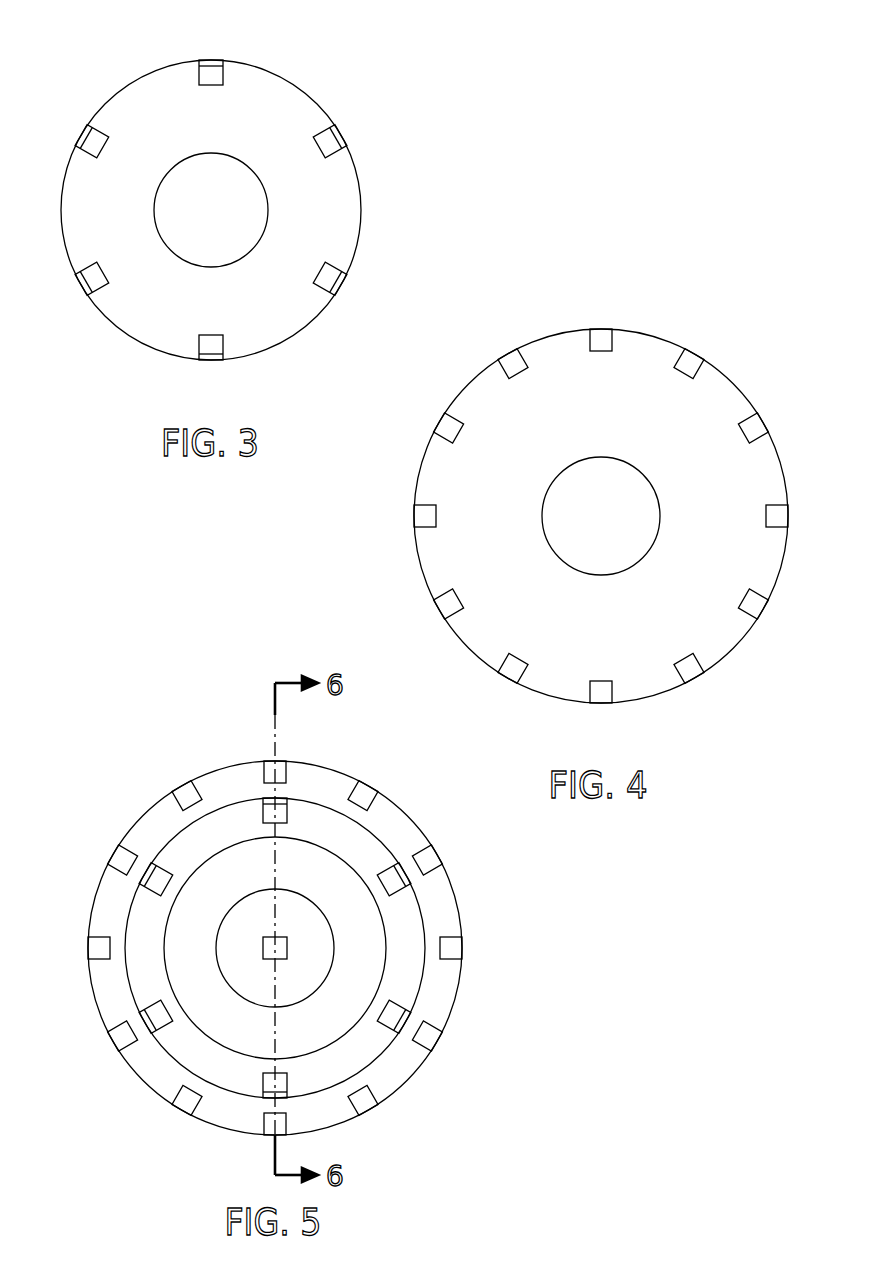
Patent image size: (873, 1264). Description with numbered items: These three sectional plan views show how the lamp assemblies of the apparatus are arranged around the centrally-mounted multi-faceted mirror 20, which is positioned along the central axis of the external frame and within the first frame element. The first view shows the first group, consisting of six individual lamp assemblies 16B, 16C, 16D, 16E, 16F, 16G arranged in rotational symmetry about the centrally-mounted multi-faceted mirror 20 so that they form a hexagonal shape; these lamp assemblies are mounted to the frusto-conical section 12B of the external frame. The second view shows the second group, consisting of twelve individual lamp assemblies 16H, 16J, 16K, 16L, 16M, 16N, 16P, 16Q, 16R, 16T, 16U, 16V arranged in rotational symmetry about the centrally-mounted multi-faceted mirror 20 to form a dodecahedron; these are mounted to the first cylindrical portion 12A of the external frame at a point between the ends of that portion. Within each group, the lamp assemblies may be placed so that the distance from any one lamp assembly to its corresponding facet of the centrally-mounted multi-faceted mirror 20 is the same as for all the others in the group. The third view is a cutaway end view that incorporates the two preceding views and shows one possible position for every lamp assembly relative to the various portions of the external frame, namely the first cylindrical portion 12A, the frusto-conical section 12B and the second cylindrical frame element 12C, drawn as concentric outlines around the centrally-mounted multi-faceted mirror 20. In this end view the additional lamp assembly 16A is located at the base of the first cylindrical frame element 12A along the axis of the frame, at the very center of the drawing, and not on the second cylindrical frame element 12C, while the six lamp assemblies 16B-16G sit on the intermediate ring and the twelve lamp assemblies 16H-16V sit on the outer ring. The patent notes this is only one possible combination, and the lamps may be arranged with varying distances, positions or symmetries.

In FIG. 4, the first cylindrical portion 12A is at (650, 336).
In FIG. 5, the first cylindrical portion 12A is at (463, 908).
In FIG. 3, the frusto-conical section 12B is at (318, 98).
In FIG. 5, the frusto-conical section 12B is at (383, 838).
In FIG. 5, the second cylindrical frame element 12C is at (306, 838).
In FIG. 3, the centrally-mounted multi-faceted mirror 20 is at (239, 161).
In FIG. 4, the centrally-mounted multi-faceted mirror 20 is at (624, 466).
In FIG. 5, the centrally-mounted multi-faceted mirror 20 is at (312, 993).
In FIG. 5, the lamp assembly 16A is at (287, 948).
In FIG. 3, the lamp assembly 16B is at (211, 60).
In FIG. 5, the lamp assembly 16B is at (272, 823).
In FIG. 3, the lamp assembly 16C is at (340, 134).
In FIG. 5, the lamp assembly 16C is at (385, 883).
In FIG. 3, the lamp assembly 16D is at (340, 282).
In FIG. 5, the lamp assembly 16D is at (390, 1010).
In FIG. 3, the lamp assembly 16E is at (211, 361).
In FIG. 5, the lamp assembly 16E is at (267, 1070).
In FIG. 3, the lamp assembly 16F is at (83, 284).
In FIG. 5, the lamp assembly 16F is at (167, 1012).
In FIG. 3, the lamp assembly 16G is at (84, 134).
In FIG. 5, the lamp assembly 16G is at (165, 889).
In FIG. 4, the lamp assembly 16H is at (601, 330).
In FIG. 5, the lamp assembly 16H is at (280, 762).
In FIG. 4, the lamp assembly 16J is at (698, 352).
In FIG. 5, the lamp assembly 16J is at (368, 787).
In FIG. 4, the lamp assembly 16K is at (768, 425).
In FIG. 5, the lamp assembly 16K is at (437, 853).
In FIG. 4, the lamp assembly 16L is at (789, 517).
In FIG. 5, the lamp assembly 16L is at (462, 950).
In FIG. 4, the lamp assembly 16M is at (765, 614).
In FIG. 5, the lamp assembly 16M is at (440, 1040).
In FIG. 4, the lamp assembly 16N is at (694, 684).
In FIG. 5, the lamp assembly 16N is at (362, 1107).
In FIG. 4, the lamp assembly 16P is at (601, 704).
In FIG. 5, the lamp assembly 16P is at (271, 1136).
In FIG. 4, the lamp assembly 16Q is at (507, 682).
In FIG. 5, the lamp assembly 16Q is at (183, 1107).
In FIG. 4, the lamp assembly 16R is at (440, 604).
In FIG. 5, the lamp assembly 16R is at (112, 1042).
In FIG. 4, the lamp assembly 16T is at (416, 516).
In FIG. 5, the lamp assembly 16T is at (88, 948).
In FIG. 4, the lamp assembly 16U is at (442, 420).
In FIG. 5, the lamp assembly 16U is at (118, 855).
In FIG. 4, the lamp assembly 16V is at (512, 352).
In FIG. 5, the lamp assembly 16V is at (186, 782).